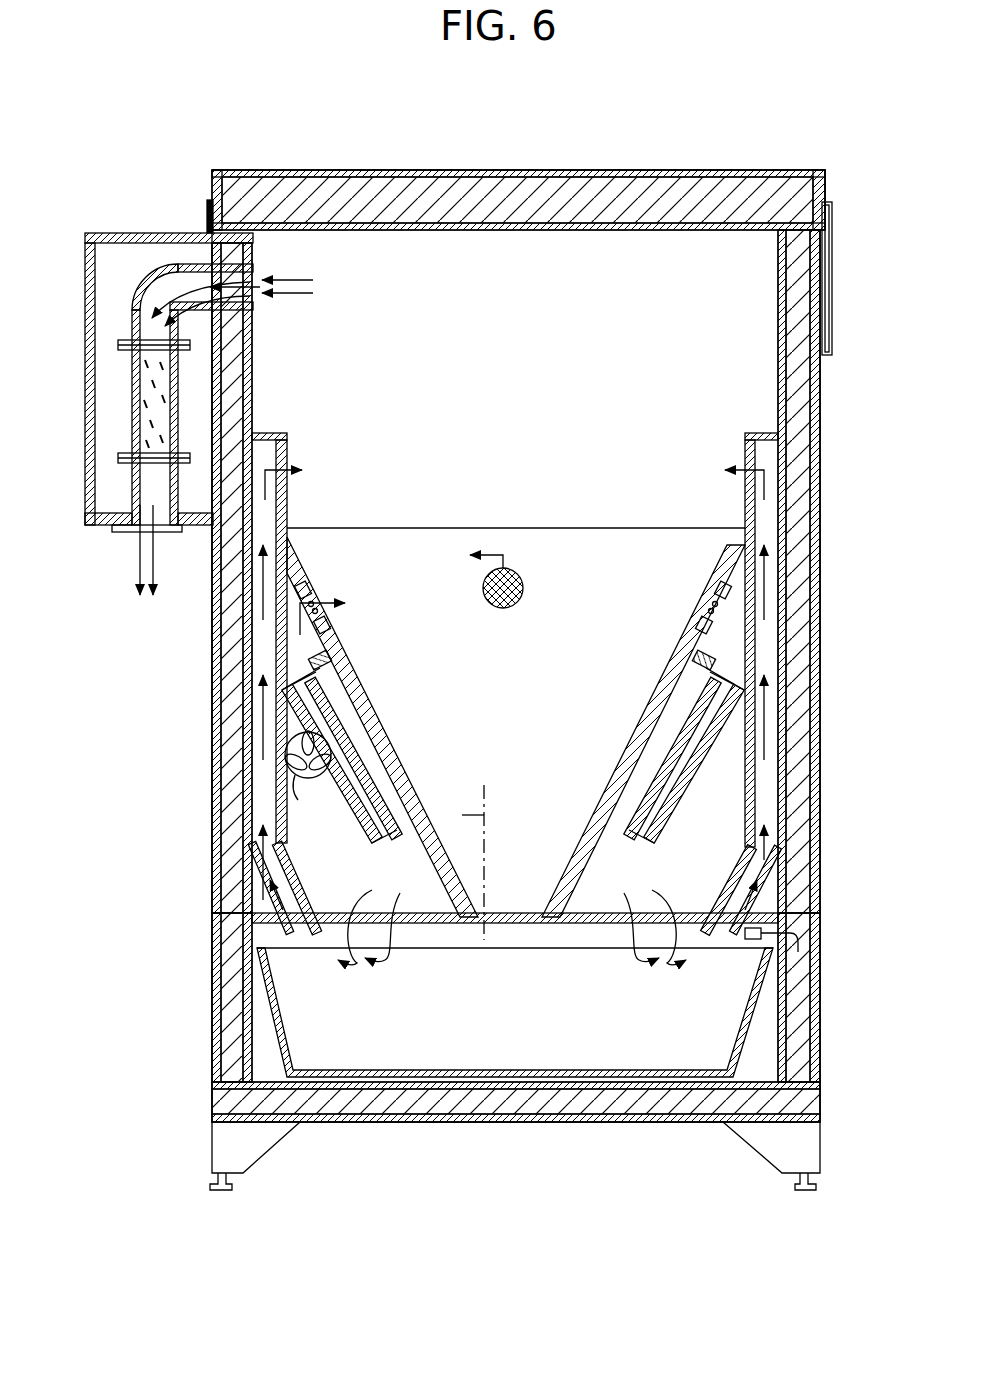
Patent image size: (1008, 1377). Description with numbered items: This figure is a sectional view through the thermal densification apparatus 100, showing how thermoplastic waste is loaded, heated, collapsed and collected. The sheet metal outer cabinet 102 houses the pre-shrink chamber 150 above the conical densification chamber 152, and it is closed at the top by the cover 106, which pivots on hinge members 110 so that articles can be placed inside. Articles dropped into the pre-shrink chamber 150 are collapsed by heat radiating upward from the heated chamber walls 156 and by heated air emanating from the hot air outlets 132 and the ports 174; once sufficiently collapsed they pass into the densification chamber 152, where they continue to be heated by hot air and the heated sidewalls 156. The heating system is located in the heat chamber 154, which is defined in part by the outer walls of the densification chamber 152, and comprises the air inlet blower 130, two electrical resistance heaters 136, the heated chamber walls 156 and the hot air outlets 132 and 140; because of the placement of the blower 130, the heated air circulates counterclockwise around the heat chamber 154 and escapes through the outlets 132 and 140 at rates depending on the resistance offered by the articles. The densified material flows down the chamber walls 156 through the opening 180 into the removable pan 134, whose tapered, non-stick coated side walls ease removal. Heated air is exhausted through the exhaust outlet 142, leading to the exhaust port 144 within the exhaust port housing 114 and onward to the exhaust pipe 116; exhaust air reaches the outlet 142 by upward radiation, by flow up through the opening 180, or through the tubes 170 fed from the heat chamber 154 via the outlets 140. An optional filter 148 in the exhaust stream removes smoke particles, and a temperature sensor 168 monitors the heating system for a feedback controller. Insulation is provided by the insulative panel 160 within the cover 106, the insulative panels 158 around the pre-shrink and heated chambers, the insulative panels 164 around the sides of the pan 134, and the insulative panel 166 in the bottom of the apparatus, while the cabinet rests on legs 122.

The apparatus 100 is at (848, 682).
The outer cabinet 102 is at (822, 422).
The cover 106 is at (633, 172).
The hinge members 110 is at (835, 253).
The exhaust port housing 114 is at (85, 272).
The exhaust pipe 116 is at (180, 490).
The legs 122 is at (265, 1160).
The air inlet blower 130 is at (300, 785).
The hot air outlets 132 is at (308, 585).
The removable pan 134 is at (283, 1020).
The electrical resistance heaters 136 is at (330, 645).
The hot air outlets 140 is at (512, 915).
The exhaust outlet 142 is at (255, 310).
The exhaust port 144 is at (155, 300).
The filter 148 is at (118, 395).
The pre-shrink chamber 150 is at (538, 364).
The densification chamber 152 is at (535, 669).
The heat chamber 154 is at (420, 812).
The heated chamber walls 156 is at (368, 710).
The insulative panels 158 is at (253, 370).
The insulative panel 160 is at (455, 172).
The insulative panels 164 is at (213, 968).
The insulative panel 166 is at (578, 1100).
The temperature sensor 168 is at (752, 942).
The tubes 170 is at (288, 885).
The ports 174 is at (290, 458).
The opening 180 is at (493, 913).